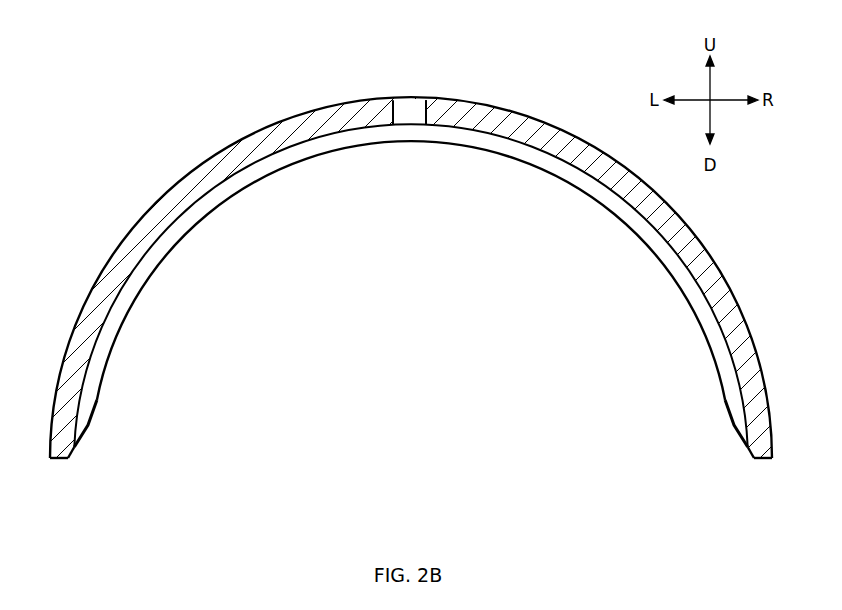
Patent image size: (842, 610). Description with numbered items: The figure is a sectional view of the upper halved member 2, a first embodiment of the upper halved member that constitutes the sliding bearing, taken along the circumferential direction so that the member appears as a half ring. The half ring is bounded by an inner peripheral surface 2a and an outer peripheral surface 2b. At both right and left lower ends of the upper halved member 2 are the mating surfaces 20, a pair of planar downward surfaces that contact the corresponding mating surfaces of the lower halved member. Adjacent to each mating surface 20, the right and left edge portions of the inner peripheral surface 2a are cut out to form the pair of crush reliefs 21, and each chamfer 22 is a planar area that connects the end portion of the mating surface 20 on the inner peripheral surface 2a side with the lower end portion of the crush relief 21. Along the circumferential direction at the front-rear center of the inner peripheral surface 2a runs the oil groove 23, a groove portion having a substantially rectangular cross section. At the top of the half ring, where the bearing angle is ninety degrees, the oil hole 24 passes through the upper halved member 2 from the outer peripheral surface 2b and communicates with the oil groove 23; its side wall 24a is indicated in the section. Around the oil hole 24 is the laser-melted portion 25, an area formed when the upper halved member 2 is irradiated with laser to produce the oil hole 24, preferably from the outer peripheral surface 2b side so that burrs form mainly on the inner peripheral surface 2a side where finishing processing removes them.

The upper halved member 2 is at (233, 119).
The inner peripheral surface 2a is at (496, 154).
The outer peripheral surface 2b is at (516, 114).
The mating surface 20 is at (60, 461).
The crush relief 21 is at (89, 427).
The chamfer 22 is at (71, 457).
The oil groove 23 is at (221, 184).
The oil hole 24 is at (409, 104).
The side wall of recess 24a is at (427, 110).
The laser-melted portion 25 is at (393, 101).